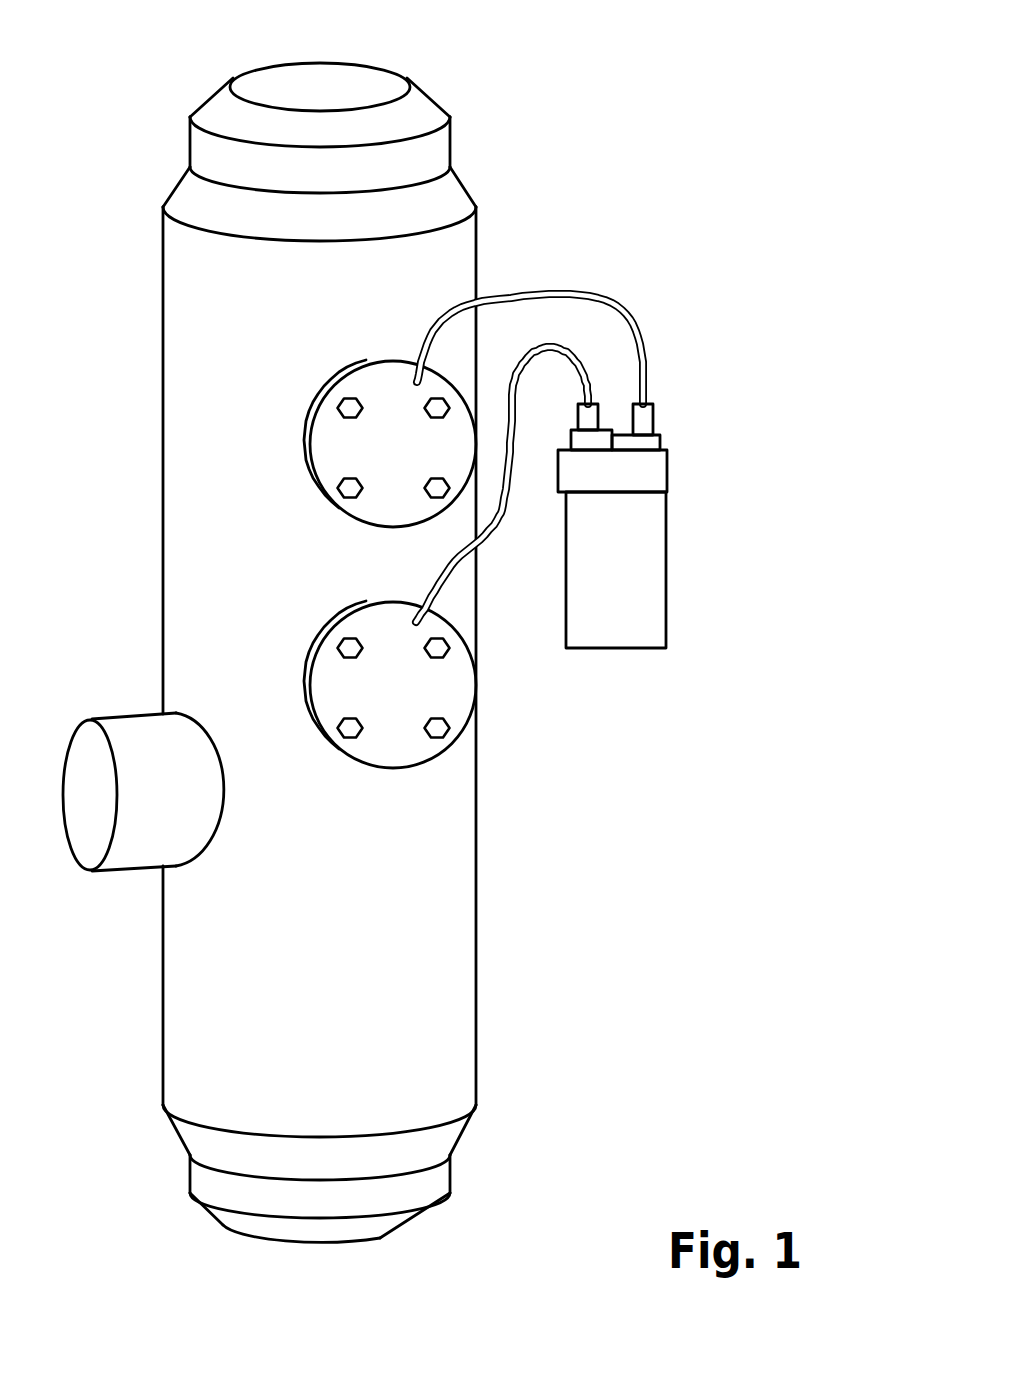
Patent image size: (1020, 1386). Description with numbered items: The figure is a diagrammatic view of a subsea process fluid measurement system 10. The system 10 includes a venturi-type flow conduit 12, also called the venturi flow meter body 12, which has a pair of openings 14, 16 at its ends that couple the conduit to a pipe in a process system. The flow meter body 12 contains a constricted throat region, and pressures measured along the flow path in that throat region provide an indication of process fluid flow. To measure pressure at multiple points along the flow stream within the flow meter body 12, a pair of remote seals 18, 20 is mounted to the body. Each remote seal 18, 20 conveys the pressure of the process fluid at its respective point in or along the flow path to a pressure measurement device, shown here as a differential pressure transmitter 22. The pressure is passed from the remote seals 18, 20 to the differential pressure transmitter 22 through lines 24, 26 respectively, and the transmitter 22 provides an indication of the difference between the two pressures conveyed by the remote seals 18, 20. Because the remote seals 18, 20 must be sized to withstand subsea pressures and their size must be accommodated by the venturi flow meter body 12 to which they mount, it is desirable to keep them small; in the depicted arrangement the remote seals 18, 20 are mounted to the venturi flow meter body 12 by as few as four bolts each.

The subsea process fluid measurement system 10 is at (776, 108).
The venturi-type flow conduit 12 is at (476, 975).
The opening 14 is at (375, 80).
The opening 16 is at (380, 1238).
The remote seal 18 is at (450, 393).
The remote seal 20 is at (447, 688).
The differential pressure transmitter 22 is at (685, 509).
The line 24 is at (600, 288).
The line 26 is at (501, 521).